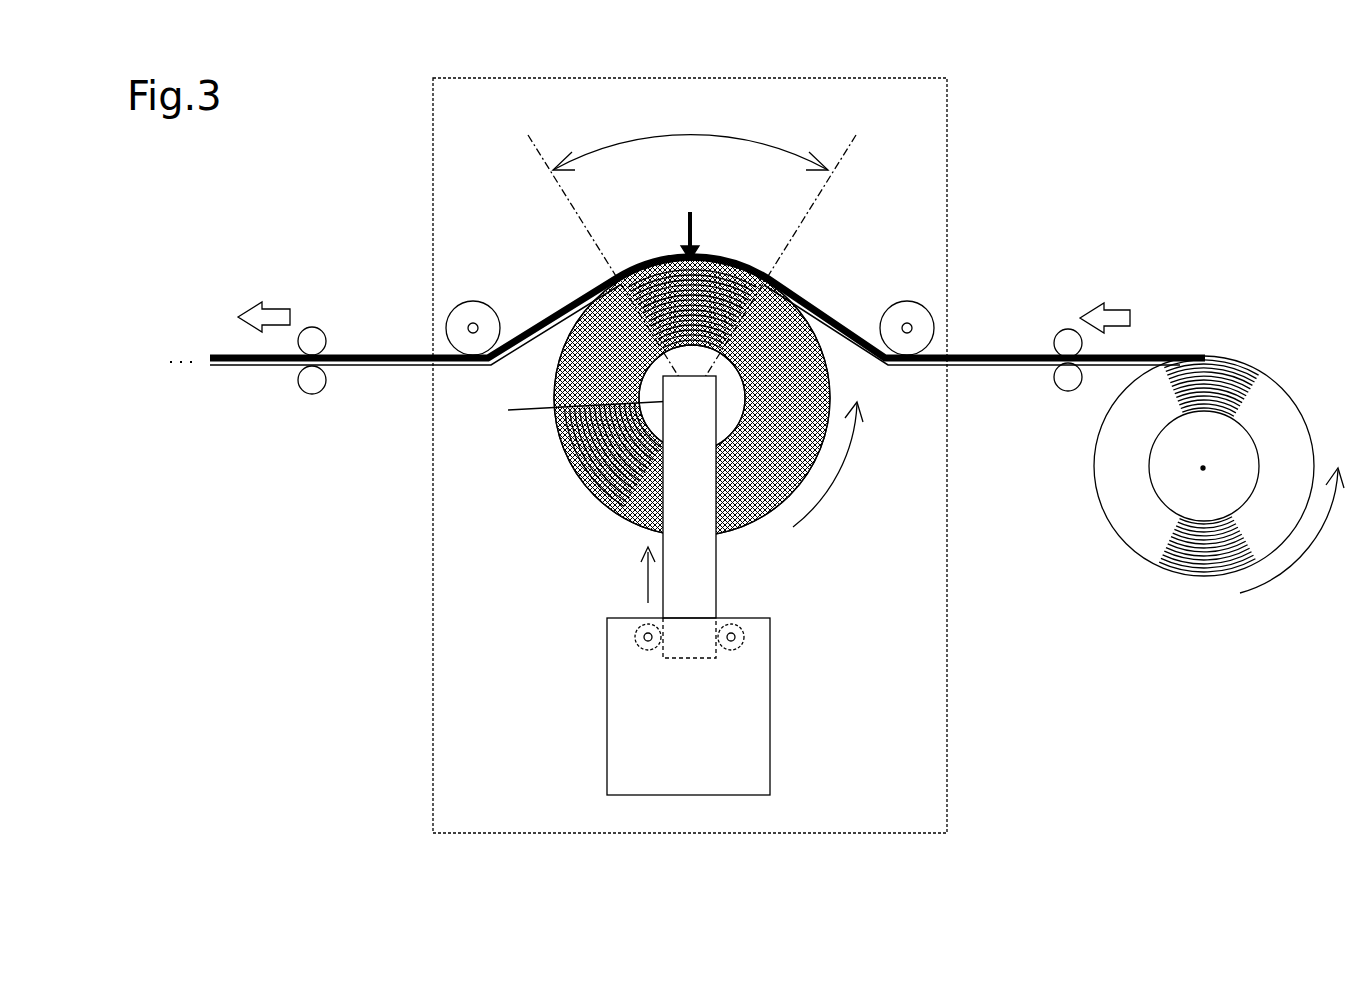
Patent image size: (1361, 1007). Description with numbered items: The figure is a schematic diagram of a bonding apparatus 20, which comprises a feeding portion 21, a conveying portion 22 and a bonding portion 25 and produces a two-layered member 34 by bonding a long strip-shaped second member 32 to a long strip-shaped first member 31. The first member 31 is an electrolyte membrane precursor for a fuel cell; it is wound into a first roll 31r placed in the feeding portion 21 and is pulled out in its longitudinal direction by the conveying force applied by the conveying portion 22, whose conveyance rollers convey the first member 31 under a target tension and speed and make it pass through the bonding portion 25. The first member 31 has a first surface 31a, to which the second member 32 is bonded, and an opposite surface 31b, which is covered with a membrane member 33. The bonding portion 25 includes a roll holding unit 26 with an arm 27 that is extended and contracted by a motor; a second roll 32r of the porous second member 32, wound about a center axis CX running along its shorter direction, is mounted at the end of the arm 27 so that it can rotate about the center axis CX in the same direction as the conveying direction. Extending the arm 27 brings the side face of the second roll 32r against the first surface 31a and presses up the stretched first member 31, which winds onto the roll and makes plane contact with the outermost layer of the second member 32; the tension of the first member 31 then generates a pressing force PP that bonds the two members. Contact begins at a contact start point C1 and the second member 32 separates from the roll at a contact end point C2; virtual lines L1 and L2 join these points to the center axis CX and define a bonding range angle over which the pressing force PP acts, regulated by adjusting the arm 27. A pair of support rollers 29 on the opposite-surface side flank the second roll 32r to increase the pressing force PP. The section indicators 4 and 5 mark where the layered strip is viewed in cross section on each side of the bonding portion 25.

The bonding apparatus 20 is at (1208, 92).
The feeding portion 21 is at (1219, 274).
The conveying portion 22 is at (312, 330).
The bonding portion 25 is at (947, 118).
The roll holding unit 26 is at (770, 676).
The arm 27 is at (705, 577).
The support rollers 29 is at (474, 307).
The first member 31 is at (258, 368).
The first surface 31a is at (1130, 365).
The opposite surface 31b is at (1123, 367).
The first roll 31r is at (1113, 495).
The second member 32 is at (270, 370).
The second roll 32r is at (627, 527).
The membrane member 33 is at (238, 354).
The two-layered member 34 is at (213, 462).
The section line 4 is at (1037, 413).
The section line 5 is at (405, 413).
The virtual line L1 is at (778, 253).
The virtual line L2 is at (604, 253).
The contact start point C1 is at (764, 278).
The contact end point C2 is at (617, 277).
The center axis CX is at (585, 410).
The pressing force PP is at (688, 223).